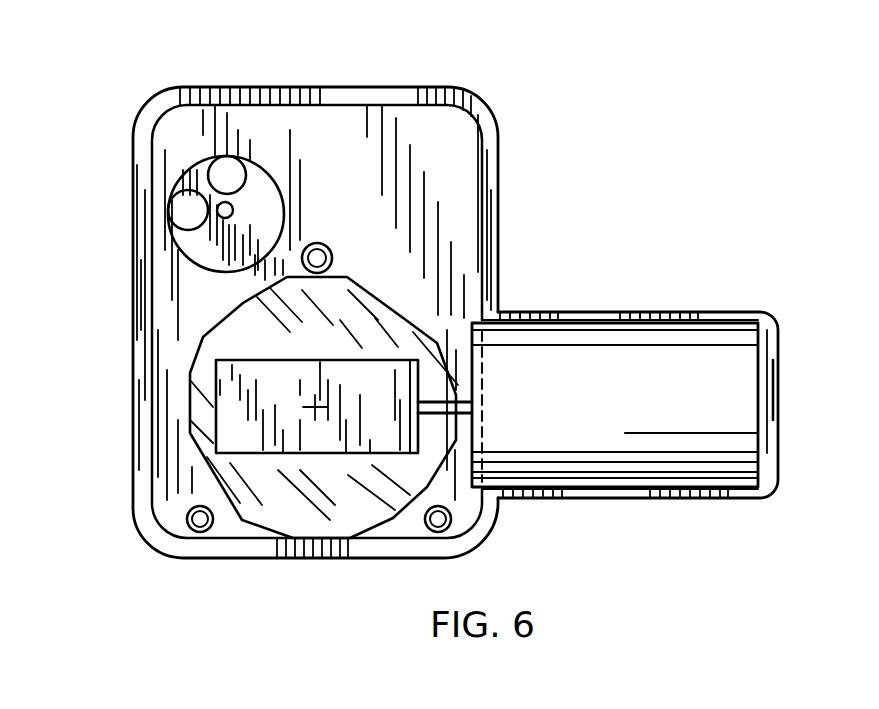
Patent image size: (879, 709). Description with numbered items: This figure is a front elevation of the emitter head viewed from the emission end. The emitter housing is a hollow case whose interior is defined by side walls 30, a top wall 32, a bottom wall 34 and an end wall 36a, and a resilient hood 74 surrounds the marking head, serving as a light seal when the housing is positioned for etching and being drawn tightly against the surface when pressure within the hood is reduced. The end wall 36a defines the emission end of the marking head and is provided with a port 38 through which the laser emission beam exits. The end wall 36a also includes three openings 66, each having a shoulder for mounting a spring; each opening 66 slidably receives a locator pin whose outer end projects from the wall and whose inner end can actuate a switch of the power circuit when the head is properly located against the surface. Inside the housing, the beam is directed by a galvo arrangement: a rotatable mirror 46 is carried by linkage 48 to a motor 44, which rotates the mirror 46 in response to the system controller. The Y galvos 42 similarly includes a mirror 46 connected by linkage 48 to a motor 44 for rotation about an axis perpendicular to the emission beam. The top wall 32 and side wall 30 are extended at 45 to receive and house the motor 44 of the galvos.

The side walls 30 is at (132, 200).
The top wall 32 is at (397, 87).
The bottom wall 34 is at (302, 558).
The resilient hood 74 is at (168, 108).
The end wall 36a is at (345, 195).
The openings 66 is at (322, 243).
The port 38 is at (412, 320).
The rotatable mirror 46 is at (232, 383).
The linkage 48 is at (425, 414).
The Y galvos 42 is at (712, 358).
The extension 45 is at (567, 312).
The motor 44 is at (603, 413).